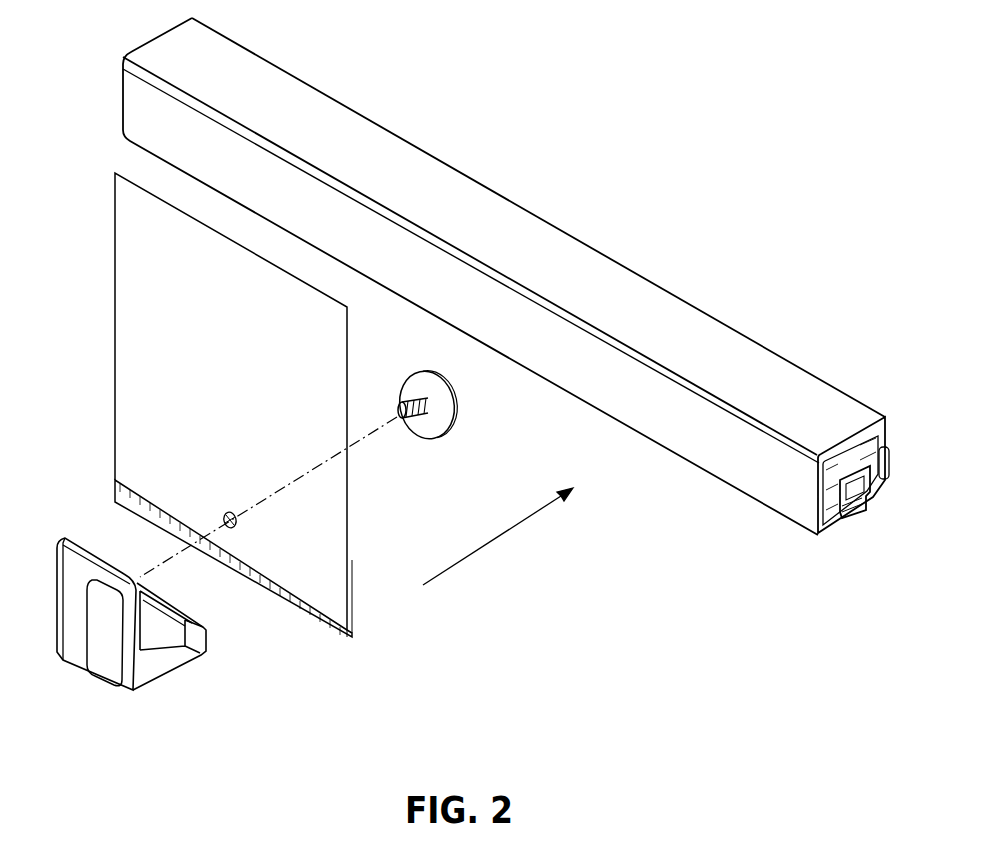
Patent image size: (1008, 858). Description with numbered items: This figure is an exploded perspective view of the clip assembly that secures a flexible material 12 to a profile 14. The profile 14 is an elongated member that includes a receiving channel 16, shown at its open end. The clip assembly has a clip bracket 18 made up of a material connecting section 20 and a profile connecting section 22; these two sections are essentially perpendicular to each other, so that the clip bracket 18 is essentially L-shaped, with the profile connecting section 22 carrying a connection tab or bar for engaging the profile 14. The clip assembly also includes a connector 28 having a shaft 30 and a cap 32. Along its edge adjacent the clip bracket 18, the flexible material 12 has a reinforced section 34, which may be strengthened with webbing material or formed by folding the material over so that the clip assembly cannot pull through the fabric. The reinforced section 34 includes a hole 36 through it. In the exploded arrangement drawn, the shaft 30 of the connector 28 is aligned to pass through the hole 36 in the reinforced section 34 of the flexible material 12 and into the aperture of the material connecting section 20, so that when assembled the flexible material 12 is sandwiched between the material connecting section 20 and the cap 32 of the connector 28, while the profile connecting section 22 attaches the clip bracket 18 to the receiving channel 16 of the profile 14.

The flexible material 12 is at (135, 287).
The profile 14 is at (520, 240).
The receiving channel 16 is at (842, 515).
The clip bracket 18 is at (123, 615).
The material connecting section 20 is at (80, 620).
The profile connecting section 22 is at (177, 657).
The connector 28 is at (467, 446).
The shaft 30 is at (418, 412).
The cap 32 is at (450, 422).
The reinforced section 34 is at (380, 607).
The hole 36 is at (231, 510).